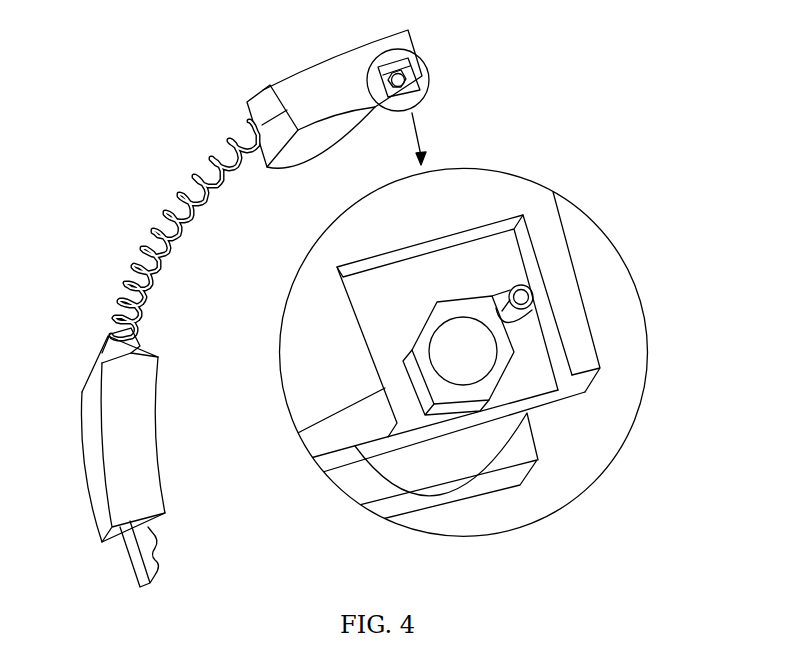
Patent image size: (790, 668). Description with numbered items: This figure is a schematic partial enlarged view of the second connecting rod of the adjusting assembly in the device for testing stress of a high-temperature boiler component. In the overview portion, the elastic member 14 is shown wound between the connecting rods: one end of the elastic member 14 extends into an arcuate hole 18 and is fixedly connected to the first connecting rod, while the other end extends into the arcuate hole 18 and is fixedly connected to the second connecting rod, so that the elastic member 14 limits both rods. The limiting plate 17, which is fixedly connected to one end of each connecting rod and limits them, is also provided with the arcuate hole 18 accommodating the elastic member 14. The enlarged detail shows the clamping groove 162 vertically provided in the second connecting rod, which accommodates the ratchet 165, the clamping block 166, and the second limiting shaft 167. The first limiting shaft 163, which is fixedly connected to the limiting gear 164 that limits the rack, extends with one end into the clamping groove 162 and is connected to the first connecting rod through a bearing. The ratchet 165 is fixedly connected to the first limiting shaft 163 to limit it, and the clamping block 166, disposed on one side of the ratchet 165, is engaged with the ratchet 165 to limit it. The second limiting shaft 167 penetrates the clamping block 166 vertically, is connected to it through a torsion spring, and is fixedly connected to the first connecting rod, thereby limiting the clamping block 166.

The elastic member 14 is at (153, 233).
The limiting plate 17 is at (102, 363).
The arcuate hole 18 is at (246, 122).
The clamping groove 162 is at (497, 250).
The first limiting shaft 163 is at (473, 358).
The limiting gear 164 is at (390, 470).
The ratchet 165 is at (417, 374).
The clamping block 166 is at (515, 290).
The second limiting shaft 167 is at (522, 297).